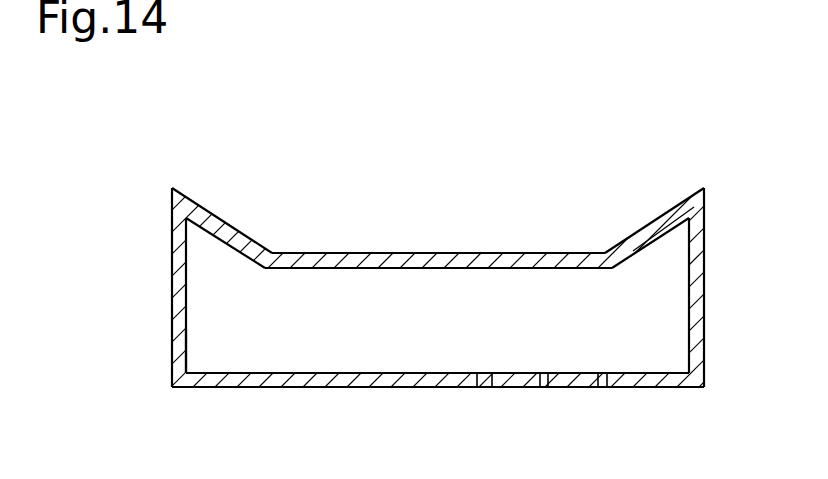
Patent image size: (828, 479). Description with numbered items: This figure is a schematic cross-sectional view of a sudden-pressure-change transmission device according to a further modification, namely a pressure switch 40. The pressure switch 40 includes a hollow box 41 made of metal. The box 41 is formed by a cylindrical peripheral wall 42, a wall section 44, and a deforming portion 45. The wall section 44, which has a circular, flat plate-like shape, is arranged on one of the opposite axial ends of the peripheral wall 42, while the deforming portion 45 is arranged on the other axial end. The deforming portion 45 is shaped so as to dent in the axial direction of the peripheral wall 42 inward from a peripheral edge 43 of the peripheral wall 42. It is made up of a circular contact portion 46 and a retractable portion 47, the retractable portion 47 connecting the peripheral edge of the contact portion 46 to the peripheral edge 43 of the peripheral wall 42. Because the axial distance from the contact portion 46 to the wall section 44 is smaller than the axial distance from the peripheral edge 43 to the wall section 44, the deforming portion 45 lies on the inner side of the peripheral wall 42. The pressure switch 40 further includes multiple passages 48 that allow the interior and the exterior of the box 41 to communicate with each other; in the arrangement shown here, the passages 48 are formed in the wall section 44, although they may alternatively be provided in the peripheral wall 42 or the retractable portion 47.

The pressure switch 40 is at (160, 210).
The box 41 is at (172, 302).
The peripheral wall 42 is at (178, 343).
The peripheral edge 43 is at (686, 229).
The wall section 44 is at (452, 378).
The deforming portion 45 is at (240, 185).
The contact portion 46 is at (320, 263).
The retractable portion 47 is at (222, 232).
The passages 48 is at (485, 375).